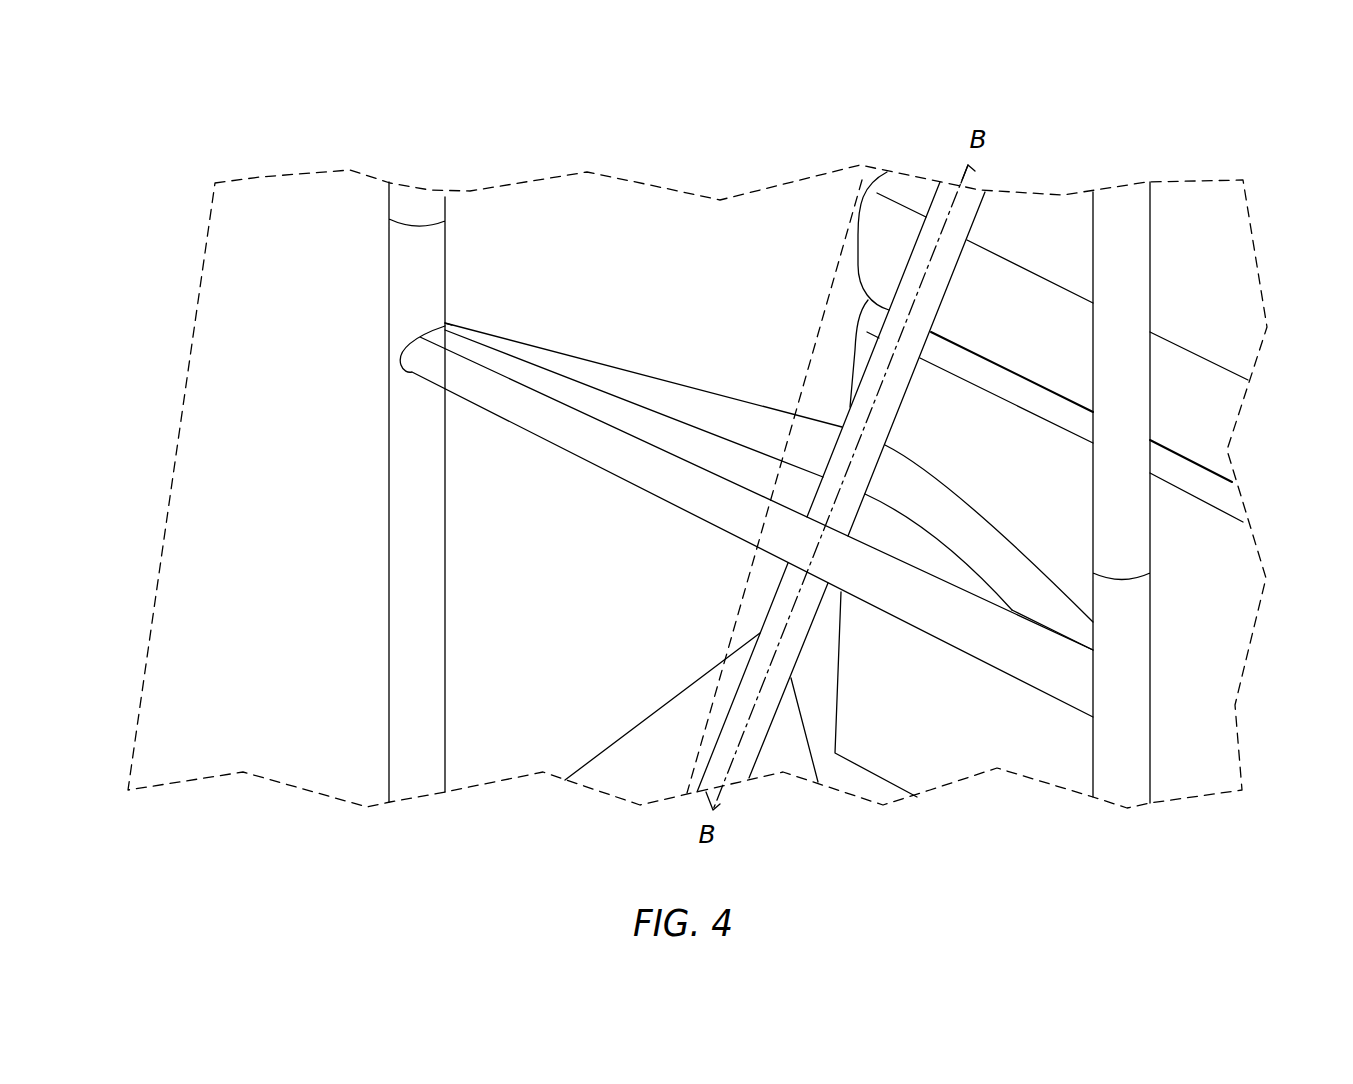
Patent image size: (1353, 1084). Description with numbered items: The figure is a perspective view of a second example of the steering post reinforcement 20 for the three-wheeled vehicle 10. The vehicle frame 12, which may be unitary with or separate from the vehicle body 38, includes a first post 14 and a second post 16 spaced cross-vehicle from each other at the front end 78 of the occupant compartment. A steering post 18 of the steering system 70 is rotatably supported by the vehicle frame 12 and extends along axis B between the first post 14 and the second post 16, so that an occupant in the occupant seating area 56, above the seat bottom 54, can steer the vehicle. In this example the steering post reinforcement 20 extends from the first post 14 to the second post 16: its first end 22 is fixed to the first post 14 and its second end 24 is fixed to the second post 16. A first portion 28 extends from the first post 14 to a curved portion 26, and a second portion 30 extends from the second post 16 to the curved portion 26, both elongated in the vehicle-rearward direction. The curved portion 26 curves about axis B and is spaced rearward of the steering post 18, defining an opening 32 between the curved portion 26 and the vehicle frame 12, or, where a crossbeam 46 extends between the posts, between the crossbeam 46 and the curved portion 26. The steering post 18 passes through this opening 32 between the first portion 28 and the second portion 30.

The three-wheeled vehicle 10 is at (1119, 116).
The vehicle frame 12 is at (1156, 268).
The first post 14 is at (1152, 401).
The second post 16 is at (402, 298).
The steering post 18 is at (938, 275).
The steering post reinforcement 20 is at (951, 489).
The first end 22 is at (1090, 637).
The second end 24 is at (447, 323).
The curved portion 26 is at (882, 475).
The first portion 28 is at (988, 547).
The second portion 30 is at (620, 367).
The opening 32 is at (806, 482).
The vehicle body 38 is at (190, 327).
The crossbeam 46 is at (577, 432).
The seat bottom 54 is at (1220, 333).
The occupant seating area 56 is at (823, 220).
The steering system 70 is at (697, 600).
The front end 78 is at (557, 296).